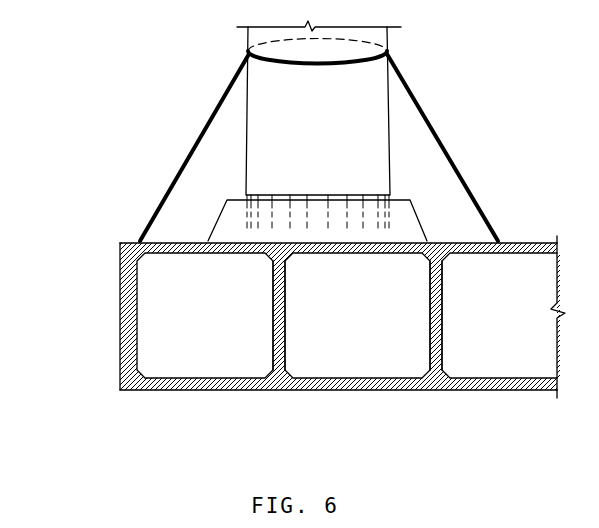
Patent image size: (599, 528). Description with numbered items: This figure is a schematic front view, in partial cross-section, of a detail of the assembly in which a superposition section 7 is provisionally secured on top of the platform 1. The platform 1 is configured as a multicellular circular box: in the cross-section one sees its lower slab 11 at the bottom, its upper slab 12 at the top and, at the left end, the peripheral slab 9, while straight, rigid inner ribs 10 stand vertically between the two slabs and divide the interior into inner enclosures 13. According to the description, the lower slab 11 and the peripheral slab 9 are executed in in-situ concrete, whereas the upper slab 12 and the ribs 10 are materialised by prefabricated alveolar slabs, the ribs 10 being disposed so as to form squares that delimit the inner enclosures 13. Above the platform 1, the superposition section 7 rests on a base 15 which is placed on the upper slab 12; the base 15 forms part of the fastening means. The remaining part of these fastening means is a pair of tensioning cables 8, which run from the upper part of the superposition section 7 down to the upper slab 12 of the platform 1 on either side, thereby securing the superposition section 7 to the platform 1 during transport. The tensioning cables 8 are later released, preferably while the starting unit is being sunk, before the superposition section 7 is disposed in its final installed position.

The platform 1 is at (56, 238).
The superposition section 7 is at (355, 85).
The tensioning cables 8 is at (201, 130).
The peripheral slab 9 is at (118, 356).
The inner ribs 10 is at (442, 315).
The lower slab 11 is at (360, 390).
The upper slab 12 is at (531, 243).
The inner enclosures 13 is at (335, 352).
The base 15 is at (402, 215).